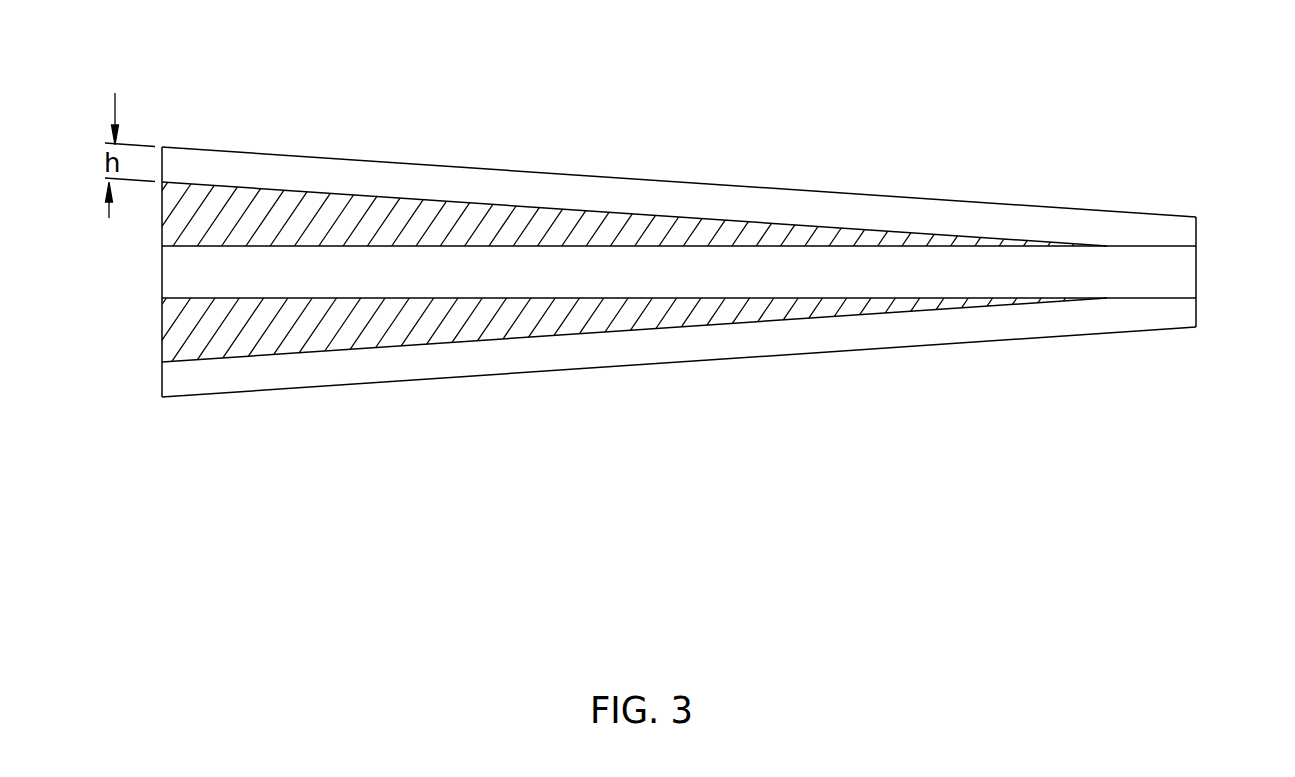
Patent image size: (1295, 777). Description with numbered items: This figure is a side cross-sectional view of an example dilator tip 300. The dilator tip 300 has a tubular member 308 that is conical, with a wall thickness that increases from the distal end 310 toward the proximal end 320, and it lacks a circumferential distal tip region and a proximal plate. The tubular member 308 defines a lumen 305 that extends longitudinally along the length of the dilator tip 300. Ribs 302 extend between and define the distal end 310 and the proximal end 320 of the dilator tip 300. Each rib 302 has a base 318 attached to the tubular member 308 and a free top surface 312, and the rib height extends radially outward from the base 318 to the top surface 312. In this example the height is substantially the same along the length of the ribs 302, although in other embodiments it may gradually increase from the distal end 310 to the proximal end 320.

The dilator tip 300 is at (947, 82).
The ribs 302 is at (418, 368).
The lumen 305 is at (915, 285).
The tubular member 308 is at (282, 205).
The distal end 310 is at (1197, 230).
The top surface 312 is at (840, 192).
The base 318 is at (647, 213).
The proximal end 320 is at (162, 230).